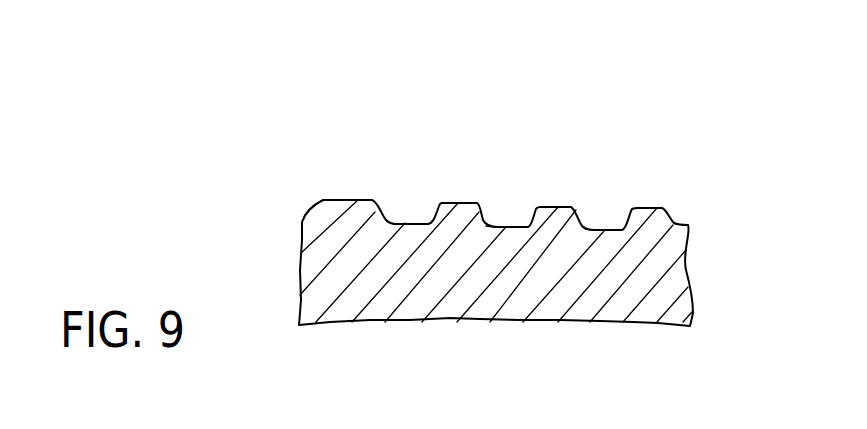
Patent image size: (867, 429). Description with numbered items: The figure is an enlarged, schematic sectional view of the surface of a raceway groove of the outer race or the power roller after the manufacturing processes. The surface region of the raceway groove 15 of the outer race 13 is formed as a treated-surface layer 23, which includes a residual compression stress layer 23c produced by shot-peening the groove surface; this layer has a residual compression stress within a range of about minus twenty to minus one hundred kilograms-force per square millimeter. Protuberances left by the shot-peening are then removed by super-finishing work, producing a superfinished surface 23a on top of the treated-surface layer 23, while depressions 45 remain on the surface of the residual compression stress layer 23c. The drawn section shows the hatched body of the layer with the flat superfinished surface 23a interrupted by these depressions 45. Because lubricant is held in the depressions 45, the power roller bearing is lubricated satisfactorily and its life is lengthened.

The depressions 45 is at (597, 212).
The outer race 13 is at (620, 107).
The treated-surface layer 23 is at (675, 282).
The superfinished surface 23a is at (349, 186).
The residual compression stress layer 23c is at (297, 217).
The raceway groove 15 is at (676, 214).